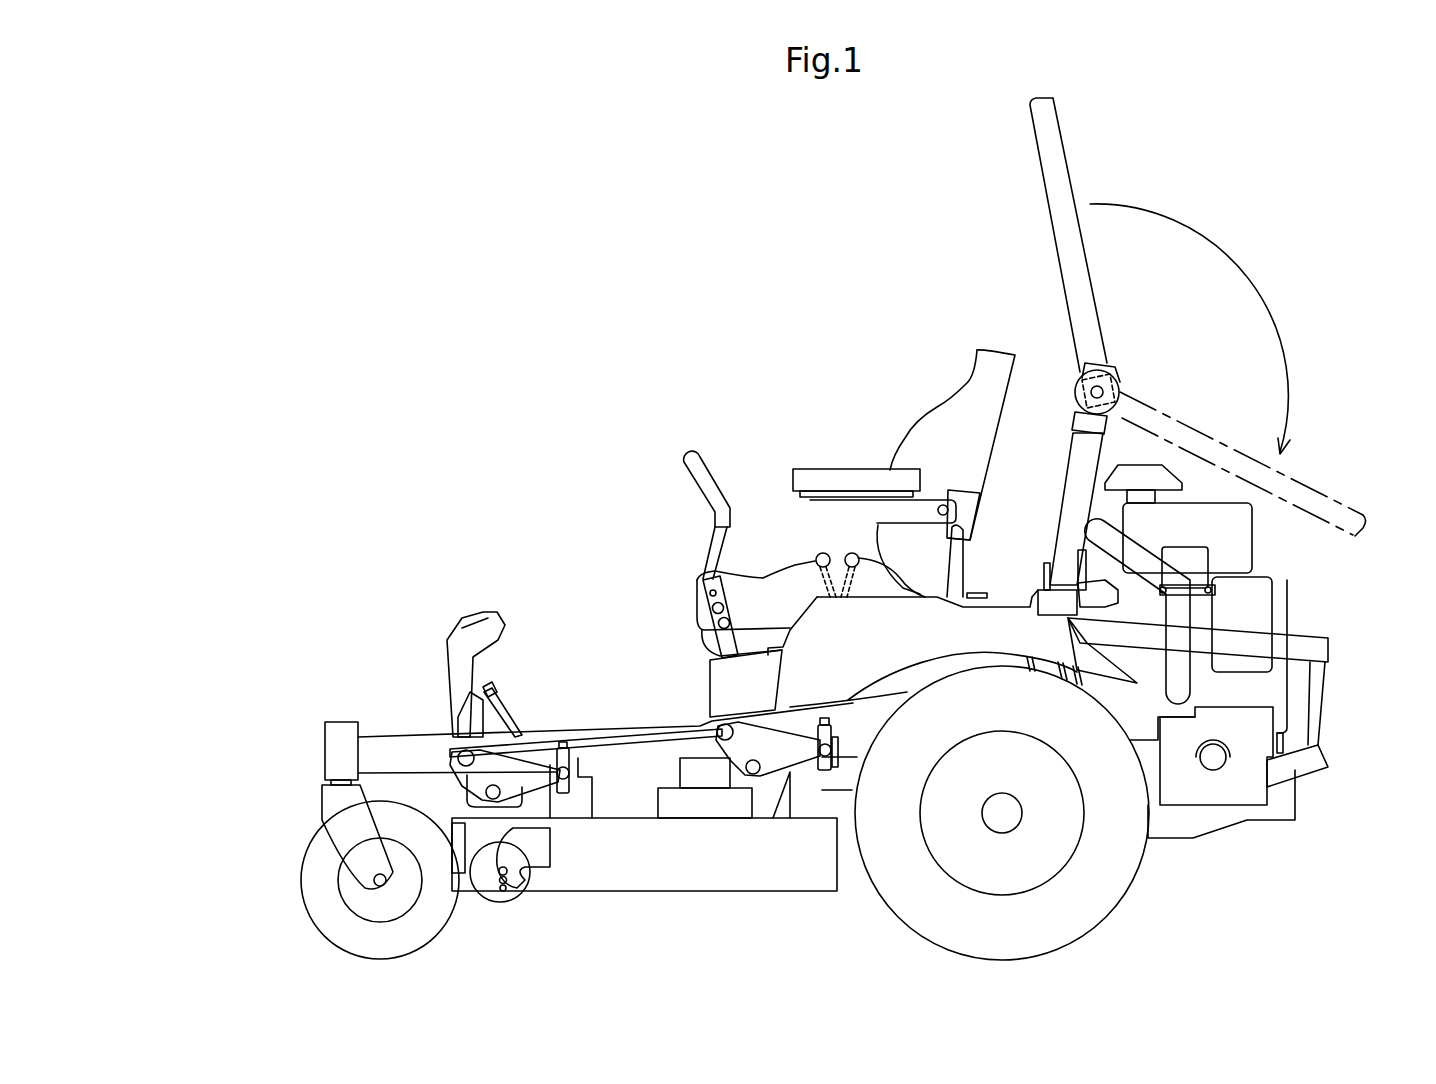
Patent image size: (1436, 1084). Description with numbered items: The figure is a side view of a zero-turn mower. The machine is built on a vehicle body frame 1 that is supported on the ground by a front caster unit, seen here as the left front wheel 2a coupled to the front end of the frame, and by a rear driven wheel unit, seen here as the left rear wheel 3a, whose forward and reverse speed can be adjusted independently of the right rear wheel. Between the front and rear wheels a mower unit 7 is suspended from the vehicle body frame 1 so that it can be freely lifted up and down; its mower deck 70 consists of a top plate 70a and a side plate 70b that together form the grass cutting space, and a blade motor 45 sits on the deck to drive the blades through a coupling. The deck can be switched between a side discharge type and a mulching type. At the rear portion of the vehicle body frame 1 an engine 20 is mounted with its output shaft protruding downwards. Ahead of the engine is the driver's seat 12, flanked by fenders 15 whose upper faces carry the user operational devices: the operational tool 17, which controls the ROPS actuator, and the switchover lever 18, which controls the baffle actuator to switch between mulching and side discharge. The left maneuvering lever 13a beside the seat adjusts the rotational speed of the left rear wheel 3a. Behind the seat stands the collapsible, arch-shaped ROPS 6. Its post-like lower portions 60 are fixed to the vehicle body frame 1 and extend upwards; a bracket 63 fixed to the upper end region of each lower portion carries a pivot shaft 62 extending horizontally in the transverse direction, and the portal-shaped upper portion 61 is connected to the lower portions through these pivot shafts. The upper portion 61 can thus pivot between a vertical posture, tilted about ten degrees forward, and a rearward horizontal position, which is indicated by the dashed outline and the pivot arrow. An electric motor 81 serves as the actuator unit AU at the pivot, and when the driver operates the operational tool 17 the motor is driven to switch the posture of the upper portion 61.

The vehicle body frame 1 is at (405, 735).
The left front wheel 2a is at (318, 883).
The left rear wheel 3a is at (1105, 883).
The ROPS 6 is at (1168, 347).
The mower unit 7 is at (618, 800).
The driver's seat 12 is at (942, 432).
The left maneuvering lever 13a is at (687, 455).
The fender 15 is at (965, 625).
The operational tool 17 is at (822, 553).
The switchover lever 18 is at (852, 553).
The engine 20 is at (1292, 610).
The blade motor 45 is at (705, 775).
The lower portion 60 is at (1078, 495).
The upper portion 61 is at (1063, 230).
The pivot shaft 62 is at (1120, 391).
The bracket 63 is at (1080, 413).
The mower deck 70 is at (644, 869).
The top plate 70a is at (713, 795).
The side plate 70b is at (660, 850).
The electric motor 81 is at (1120, 386).
The actuator unit AU is at (1140, 351).